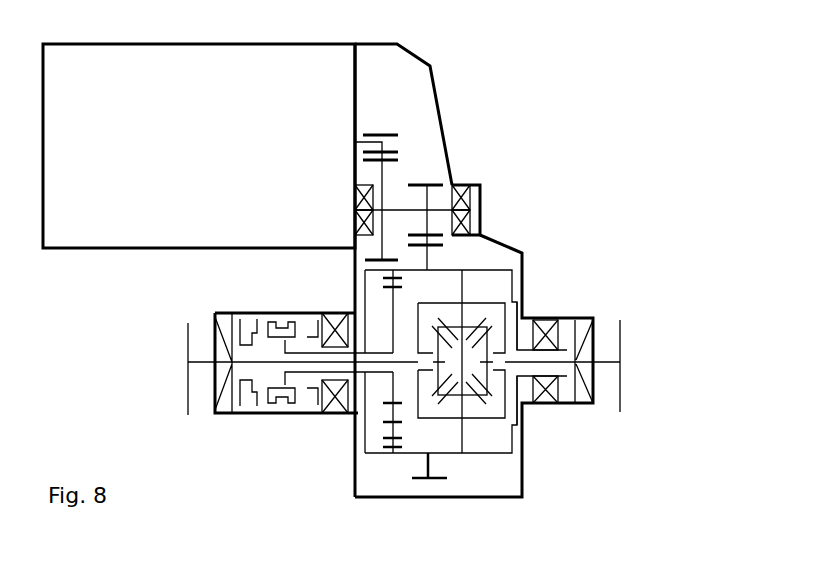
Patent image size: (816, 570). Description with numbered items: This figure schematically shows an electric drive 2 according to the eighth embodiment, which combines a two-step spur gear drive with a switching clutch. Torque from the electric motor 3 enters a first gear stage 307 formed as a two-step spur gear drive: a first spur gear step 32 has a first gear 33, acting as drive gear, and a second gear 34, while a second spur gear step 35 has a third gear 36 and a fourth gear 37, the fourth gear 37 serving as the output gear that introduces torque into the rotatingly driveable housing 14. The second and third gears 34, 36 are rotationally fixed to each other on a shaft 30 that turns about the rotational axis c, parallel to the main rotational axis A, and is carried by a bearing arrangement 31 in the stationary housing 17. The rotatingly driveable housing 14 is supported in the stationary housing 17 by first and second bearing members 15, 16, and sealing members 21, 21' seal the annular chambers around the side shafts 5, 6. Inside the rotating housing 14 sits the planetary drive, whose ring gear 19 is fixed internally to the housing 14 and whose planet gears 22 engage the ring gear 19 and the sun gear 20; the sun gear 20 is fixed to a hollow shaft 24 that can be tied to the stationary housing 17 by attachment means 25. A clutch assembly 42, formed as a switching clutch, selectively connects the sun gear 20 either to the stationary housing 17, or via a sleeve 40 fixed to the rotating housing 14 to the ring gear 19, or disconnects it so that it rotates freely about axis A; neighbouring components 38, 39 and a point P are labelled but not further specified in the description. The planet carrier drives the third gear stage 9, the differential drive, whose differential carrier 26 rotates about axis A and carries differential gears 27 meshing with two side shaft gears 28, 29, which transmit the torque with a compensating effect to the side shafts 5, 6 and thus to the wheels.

The electric drive 2 is at (571, 66).
The electric motor 3 is at (214, 152).
The side shaft 5 is at (602, 366).
The side shaft 6 is at (203, 364).
The third gear stage 9 is at (504, 434).
The rotatingly driveable housing 14 is at (503, 269).
The first bearing member 15 is at (555, 328).
The second bearing member 16 is at (335, 406).
The stationary housing 17 is at (518, 252).
The ring gear 19 is at (399, 283).
The sun gear 20 is at (390, 405).
The sealing member 21 is at (607, 344).
The sealing member 21' is at (224, 386).
The planet gears 22 is at (381, 455).
The hollow shaft 24 is at (332, 352).
The attachment means 25 is at (244, 320).
The differential carrier 26 is at (493, 301).
The differential gears 27 is at (493, 388).
The side shaft gear 28 is at (517, 404).
The side shaft gear 29 is at (430, 320).
The shaft 30 is at (473, 183).
The first bearing arrangement 31 is at (480, 200).
The first spur gear step 32 is at (407, 150).
The first gear 33 is at (369, 133).
The second gear 34 is at (392, 164).
The second spur gear step 35 is at (455, 245).
The third gear 36 is at (435, 183).
The fourth gear 37 is at (443, 485).
The coupling element 38 is at (287, 322).
The coupling element 39 is at (250, 328).
The sleeve 40 is at (310, 337).
The clutch assembly 42 is at (278, 420).
The first gear stage 307 is at (405, 108).
The rotational axis A is at (448, 370).
The rotational axis c is at (393, 213).
The point P is at (402, 107).